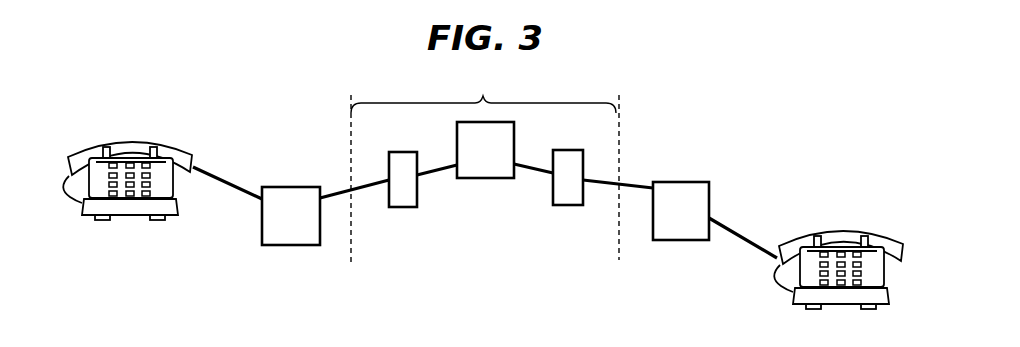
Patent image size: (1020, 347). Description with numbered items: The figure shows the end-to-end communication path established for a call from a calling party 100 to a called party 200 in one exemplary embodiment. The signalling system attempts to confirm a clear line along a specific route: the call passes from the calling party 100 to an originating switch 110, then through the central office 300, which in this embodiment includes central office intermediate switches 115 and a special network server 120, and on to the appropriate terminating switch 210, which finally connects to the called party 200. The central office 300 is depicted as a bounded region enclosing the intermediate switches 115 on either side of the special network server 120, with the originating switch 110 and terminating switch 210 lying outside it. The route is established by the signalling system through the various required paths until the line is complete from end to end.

The calling party 100 is at (152, 139).
The originating switch 110 is at (276, 230).
The central office intermediate switches 115 is at (405, 207).
The special network server 120 is at (502, 163).
The called party 200 is at (830, 228).
The terminating switch 210 is at (697, 226).
The central office 300 is at (485, 165).